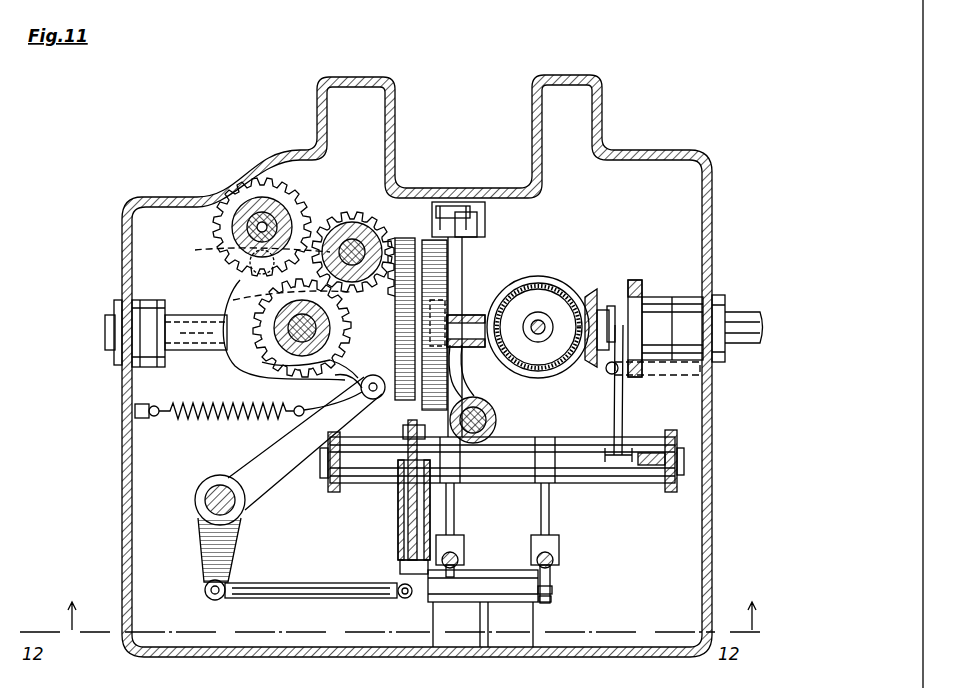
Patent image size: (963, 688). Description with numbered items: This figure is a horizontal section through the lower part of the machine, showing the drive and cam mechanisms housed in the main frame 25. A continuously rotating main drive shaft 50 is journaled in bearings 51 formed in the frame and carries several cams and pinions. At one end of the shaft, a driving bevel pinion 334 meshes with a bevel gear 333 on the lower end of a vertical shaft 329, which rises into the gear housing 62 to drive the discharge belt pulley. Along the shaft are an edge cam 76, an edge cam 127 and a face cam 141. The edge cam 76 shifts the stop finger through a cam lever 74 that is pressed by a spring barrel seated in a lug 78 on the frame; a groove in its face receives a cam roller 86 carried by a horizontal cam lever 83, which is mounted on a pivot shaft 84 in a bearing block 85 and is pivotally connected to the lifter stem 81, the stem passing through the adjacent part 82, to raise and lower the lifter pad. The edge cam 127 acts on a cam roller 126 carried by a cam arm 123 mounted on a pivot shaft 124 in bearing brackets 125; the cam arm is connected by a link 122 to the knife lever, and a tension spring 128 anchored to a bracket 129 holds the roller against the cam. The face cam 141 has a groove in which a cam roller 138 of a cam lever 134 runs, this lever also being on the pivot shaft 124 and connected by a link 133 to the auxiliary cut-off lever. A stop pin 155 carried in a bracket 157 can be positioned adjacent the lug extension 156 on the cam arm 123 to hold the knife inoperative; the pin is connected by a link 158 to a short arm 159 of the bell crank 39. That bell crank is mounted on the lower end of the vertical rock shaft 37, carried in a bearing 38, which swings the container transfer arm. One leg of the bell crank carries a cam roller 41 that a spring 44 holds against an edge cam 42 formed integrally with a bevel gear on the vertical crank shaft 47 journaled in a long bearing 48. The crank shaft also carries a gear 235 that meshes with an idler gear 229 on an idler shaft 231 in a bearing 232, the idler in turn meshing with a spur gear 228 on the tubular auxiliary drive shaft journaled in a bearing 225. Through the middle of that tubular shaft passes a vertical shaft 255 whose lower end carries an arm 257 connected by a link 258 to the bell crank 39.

The main frame 25 is at (714, 186).
The main drive shaft 50 is at (178, 318).
The bearings 51 is at (113, 302).
The bearing 225 is at (244, 214).
The spur gear 228 is at (215, 224).
The vertical shaft 255 is at (262, 226).
The arm 257 is at (244, 245).
The link 258 is at (274, 279).
The idler gear 229 is at (341, 216).
The idler shaft 231 is at (356, 248).
The bearing 232 is at (388, 236).
The face cam 141 is at (405, 242).
The edge cam 76 is at (432, 276).
The cam roller 138 is at (396, 330).
The pivot shaft 84 is at (487, 216).
The bearing block 85 is at (464, 206).
The cam roller 86 is at (442, 318).
The cam lever 83 is at (464, 374).
The lifter stem 81 is at (482, 412).
The bearing 82 is at (496, 424).
The vertical shaft 329 is at (539, 322).
The bevel gear 333 is at (566, 289).
The gear housing 62 is at (565, 371).
The driving bevel pinion 334 is at (598, 298).
The edge cam 127 is at (636, 282).
The cam roller 126 is at (648, 302).
The tension spring 128 is at (610, 376).
The bracket 129 is at (668, 378).
The cam arm 123 is at (604, 430).
The bearing brackets 125 is at (330, 478).
The pivot shaft 124 is at (685, 462).
The cam lever 74 is at (418, 451).
The cam lever 134 is at (448, 516).
The lug 78 is at (400, 544).
The link 133 is at (464, 566).
The link 122 is at (552, 573).
The stop pin 155 is at (552, 591).
The lug extension 156 is at (551, 600).
The bracket 157 is at (510, 602).
The edge cam 42 is at (240, 350).
The gear 235 is at (262, 362).
The crank shaft 47 is at (286, 363).
The bearing 48 is at (344, 379).
The cam roller 41 is at (364, 394).
The spring 44 is at (220, 417).
The bell crank 39 is at (252, 490).
The bearing 38 is at (206, 496).
The rock shaft 37 is at (208, 505).
The short arm 159 is at (222, 568).
The link 158 is at (316, 586).